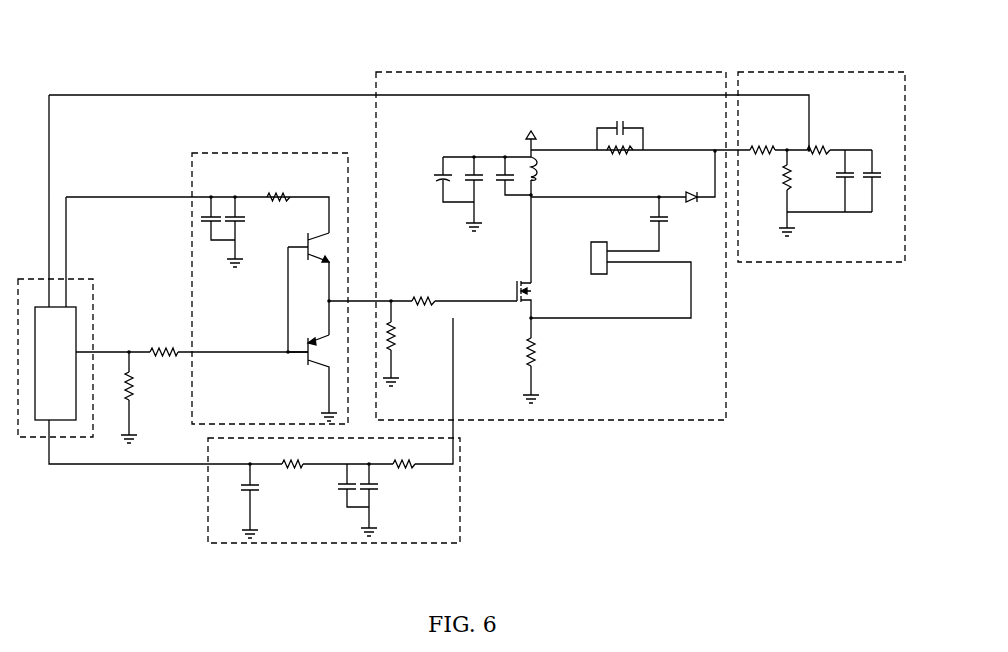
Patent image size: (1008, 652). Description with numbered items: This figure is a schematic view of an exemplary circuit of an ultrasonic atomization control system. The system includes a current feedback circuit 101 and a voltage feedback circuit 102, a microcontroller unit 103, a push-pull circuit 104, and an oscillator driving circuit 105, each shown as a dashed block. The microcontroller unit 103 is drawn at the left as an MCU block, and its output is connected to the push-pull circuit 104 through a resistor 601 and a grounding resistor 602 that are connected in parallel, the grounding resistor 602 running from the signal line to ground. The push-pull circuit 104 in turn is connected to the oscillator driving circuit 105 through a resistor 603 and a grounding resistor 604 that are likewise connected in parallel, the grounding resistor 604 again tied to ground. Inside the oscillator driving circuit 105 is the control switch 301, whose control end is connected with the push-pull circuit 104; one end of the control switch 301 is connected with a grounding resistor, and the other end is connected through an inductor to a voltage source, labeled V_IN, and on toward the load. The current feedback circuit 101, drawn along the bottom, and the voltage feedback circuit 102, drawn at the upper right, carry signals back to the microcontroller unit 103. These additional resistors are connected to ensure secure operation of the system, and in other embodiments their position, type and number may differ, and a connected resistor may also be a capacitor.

The current feedback circuit 101 is at (460, 508).
The voltage feedback circuit 102 is at (805, 72).
The microcontroller unit 103 is at (21, 279).
The push-pull circuit 104 is at (280, 153).
The oscillator driving circuit 105 is at (567, 72).
The control switch 301 is at (542, 299).
The resistor 601 is at (166, 341).
The grounding resistor 602 is at (144, 397).
The resistor 603 is at (423, 291).
The grounding resistor 604 is at (407, 343).